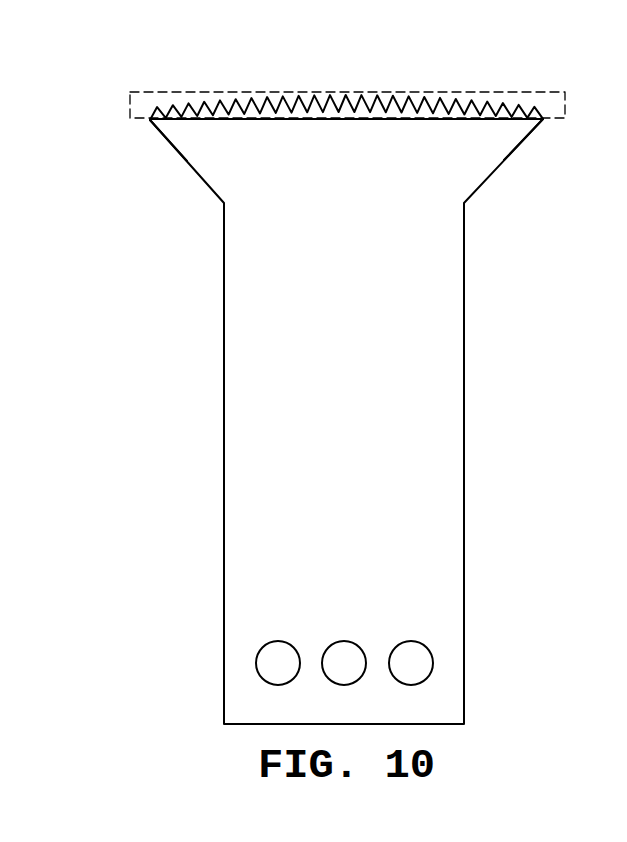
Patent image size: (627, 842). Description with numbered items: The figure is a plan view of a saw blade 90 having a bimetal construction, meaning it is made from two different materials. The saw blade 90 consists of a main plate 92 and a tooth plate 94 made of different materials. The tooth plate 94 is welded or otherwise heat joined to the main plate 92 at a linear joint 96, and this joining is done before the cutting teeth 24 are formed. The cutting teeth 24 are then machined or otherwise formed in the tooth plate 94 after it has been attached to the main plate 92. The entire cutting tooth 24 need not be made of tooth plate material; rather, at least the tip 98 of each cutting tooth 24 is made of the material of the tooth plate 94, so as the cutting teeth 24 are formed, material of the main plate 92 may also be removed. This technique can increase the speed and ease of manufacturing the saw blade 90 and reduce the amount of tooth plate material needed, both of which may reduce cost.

The saw blade 90 is at (372, 380).
The main plate 92 is at (438, 295).
The cutting teeth 24 is at (458, 105).
The tooth plate 94 is at (220, 98).
The linear joint 96 is at (200, 120).
The tip 98 is at (545, 119).